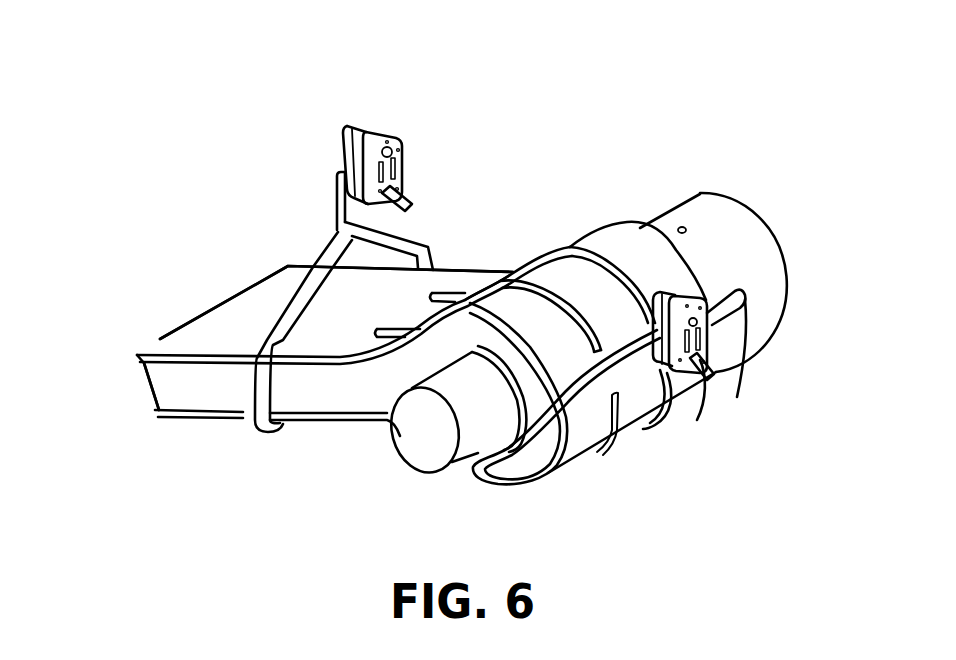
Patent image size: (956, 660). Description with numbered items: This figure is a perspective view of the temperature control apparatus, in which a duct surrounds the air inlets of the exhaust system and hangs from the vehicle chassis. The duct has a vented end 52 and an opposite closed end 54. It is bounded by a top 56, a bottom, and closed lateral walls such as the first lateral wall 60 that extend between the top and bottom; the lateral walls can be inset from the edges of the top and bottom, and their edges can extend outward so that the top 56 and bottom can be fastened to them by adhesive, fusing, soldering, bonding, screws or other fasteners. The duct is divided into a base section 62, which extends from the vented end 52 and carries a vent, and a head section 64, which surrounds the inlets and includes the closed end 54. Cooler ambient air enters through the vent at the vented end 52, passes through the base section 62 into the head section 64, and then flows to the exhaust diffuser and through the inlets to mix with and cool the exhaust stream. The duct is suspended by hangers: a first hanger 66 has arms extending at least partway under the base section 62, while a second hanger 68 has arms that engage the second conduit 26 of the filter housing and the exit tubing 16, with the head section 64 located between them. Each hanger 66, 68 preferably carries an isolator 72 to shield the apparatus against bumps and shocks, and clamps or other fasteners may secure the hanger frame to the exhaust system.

The exit tubing 16 is at (723, 230).
The second conduit 26 is at (473, 440).
The vented end 52 is at (143, 382).
The closed end 54 is at (637, 378).
The top 56 is at (433, 273).
The first lateral wall 60 is at (203, 392).
The base section 62 is at (262, 300).
The head section 64 is at (562, 272).
The first hanger 66 is at (740, 353).
The second hanger 68 is at (337, 221).
The isolator 72 is at (360, 126).